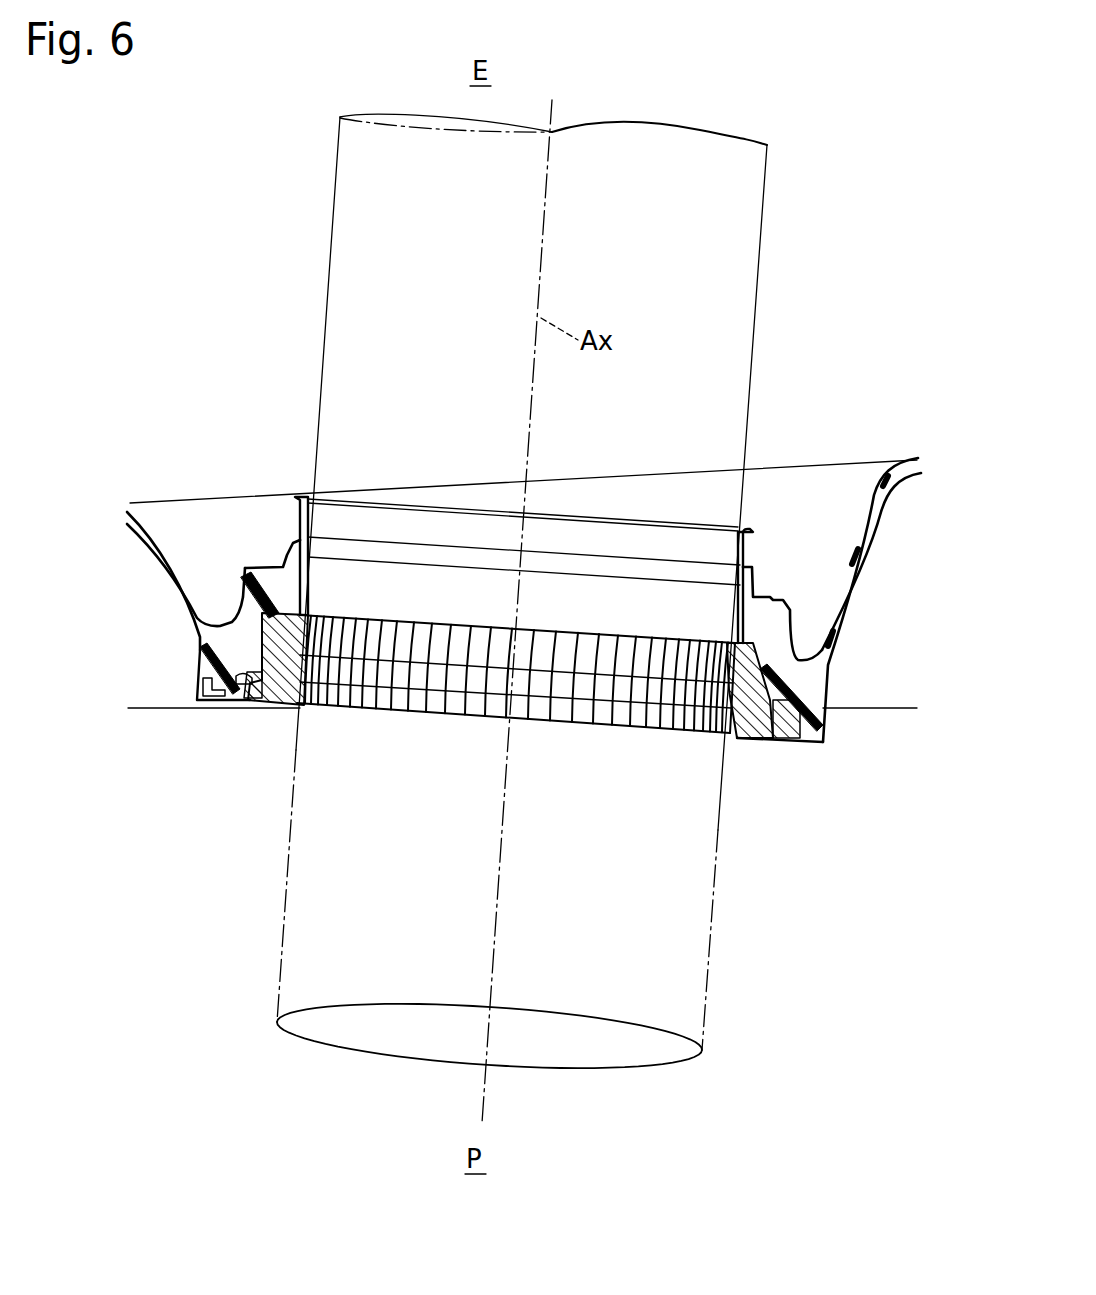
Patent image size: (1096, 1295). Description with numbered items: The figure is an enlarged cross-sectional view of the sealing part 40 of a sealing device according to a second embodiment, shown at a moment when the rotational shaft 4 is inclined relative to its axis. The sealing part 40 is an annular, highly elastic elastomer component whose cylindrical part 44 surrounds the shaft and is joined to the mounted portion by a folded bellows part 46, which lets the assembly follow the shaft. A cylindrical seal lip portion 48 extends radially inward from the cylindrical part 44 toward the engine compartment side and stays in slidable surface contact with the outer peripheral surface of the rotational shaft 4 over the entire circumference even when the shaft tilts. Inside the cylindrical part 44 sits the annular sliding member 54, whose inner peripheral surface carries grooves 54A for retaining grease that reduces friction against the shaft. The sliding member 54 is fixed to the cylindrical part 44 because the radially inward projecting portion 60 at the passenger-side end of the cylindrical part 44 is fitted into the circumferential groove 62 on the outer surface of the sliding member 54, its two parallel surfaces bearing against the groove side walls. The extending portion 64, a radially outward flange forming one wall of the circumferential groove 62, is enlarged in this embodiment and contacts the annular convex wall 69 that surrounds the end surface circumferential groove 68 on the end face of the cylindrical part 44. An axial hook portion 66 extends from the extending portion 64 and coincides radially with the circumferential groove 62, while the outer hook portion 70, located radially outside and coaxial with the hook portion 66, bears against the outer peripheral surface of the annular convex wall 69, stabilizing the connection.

The rotational shaft 4 is at (322, 286).
The sealing part 40 is at (165, 768).
The cylindrical part 44 is at (220, 634).
The bellows part 46 is at (142, 505).
The seal lip portion 48 is at (302, 503).
The sliding member 54 is at (310, 642).
The grooves 54A is at (447, 652).
The projecting portion 60 is at (745, 733).
The circumferential groove 62 is at (760, 733).
The extending portion 64 is at (250, 700).
The hook portion 66 is at (205, 672).
The end surface circumferential groove 68 is at (243, 690).
The annular convex wall 69 is at (197, 698).
The outer hook portion 70 is at (197, 682).